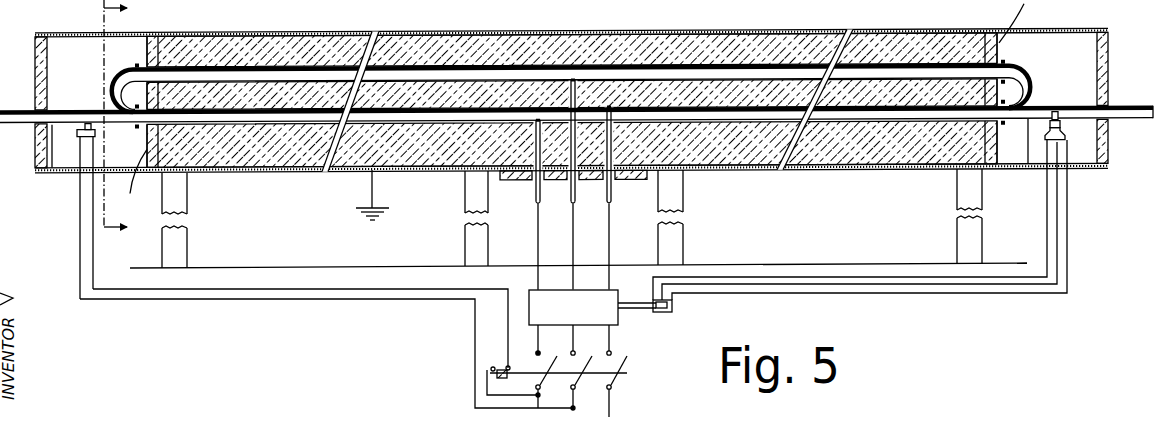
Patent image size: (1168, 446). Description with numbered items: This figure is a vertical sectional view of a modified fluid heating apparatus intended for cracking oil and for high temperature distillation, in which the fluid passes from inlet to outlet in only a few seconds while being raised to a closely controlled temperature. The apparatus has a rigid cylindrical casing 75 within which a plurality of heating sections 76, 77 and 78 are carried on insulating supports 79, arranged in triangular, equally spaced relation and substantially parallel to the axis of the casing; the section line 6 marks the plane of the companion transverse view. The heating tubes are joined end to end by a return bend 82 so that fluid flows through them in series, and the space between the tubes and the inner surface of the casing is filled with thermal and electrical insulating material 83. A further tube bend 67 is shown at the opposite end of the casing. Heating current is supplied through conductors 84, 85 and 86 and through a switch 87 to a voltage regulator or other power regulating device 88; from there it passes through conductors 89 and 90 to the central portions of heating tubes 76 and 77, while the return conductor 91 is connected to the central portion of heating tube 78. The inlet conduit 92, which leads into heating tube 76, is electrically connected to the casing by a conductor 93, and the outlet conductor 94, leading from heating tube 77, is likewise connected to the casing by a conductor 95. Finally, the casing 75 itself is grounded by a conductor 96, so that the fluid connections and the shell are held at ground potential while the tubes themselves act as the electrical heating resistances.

The section line 6 is at (115, 126).
The tube return bend 67 is at (1023, 77).
The casing 75 is at (725, 168).
The heating section 76 is at (84, 111).
The heating section 77 is at (809, 163).
The heating section 78 is at (872, 45).
The insulating supports 79 is at (188, 240).
The return bend 82 is at (121, 71).
The thermal and electrical insulating material 83 is at (881, 149).
The conductor 84 is at (540, 411).
The conductor 85 is at (610, 418).
The conductor 86 is at (573, 411).
The switch 87 is at (622, 379).
The power regulating device 88 is at (620, 317).
The conductor 89 is at (609, 238).
The conductor 90 is at (538, 240).
The return conductor 91 is at (573, 240).
The inlet conduit 92 is at (22, 110).
The conductor 93 is at (67, 150).
The outlet conductor 94 is at (1127, 108).
The conductor 95 is at (1028, 155).
The conductor 96 is at (372, 180).